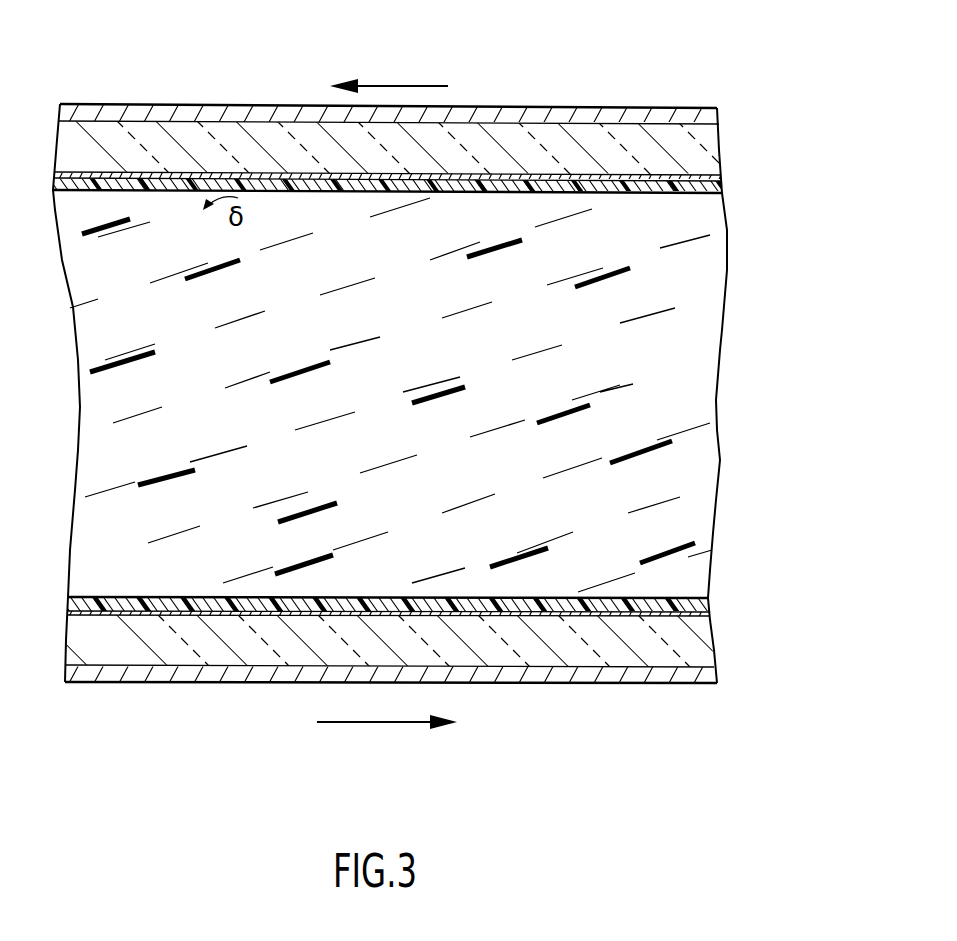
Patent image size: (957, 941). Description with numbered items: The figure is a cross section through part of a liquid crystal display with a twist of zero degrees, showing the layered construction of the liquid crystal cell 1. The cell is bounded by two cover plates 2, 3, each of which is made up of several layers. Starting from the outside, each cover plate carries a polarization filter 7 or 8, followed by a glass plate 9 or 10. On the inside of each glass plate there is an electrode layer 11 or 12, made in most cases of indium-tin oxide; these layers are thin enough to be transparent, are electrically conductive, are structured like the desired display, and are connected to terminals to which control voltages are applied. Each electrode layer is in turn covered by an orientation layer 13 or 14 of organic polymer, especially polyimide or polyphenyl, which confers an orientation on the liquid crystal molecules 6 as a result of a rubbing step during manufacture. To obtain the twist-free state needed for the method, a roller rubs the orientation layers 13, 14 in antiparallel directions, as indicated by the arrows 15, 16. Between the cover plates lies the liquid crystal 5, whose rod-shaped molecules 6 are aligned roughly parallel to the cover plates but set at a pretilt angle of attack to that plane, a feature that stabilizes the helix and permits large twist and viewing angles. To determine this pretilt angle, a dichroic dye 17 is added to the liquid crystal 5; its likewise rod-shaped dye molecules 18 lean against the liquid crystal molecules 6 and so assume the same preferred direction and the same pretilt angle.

The liquid crystal cell 1 is at (748, 254).
The cover plate 2 is at (737, 144).
The cover plate 3 is at (728, 643).
The liquid crystal 5 is at (705, 456).
The liquid crystal molecules 6 is at (752, 334).
The polarization filter 7 is at (588, 112).
The polarization filter 8 is at (590, 675).
The glass plate 9 is at (673, 145).
The glass plate 10 is at (657, 650).
The electrode layer 11 is at (510, 173).
The electrode layer 12 is at (523, 613).
The orientation layer 13 is at (290, 175).
The orientation layer 14 is at (192, 603).
The arrow 15 is at (393, 83).
The arrow 16 is at (384, 722).
The dichroic dye 17 is at (709, 512).
The dye molecules 18 is at (117, 370).